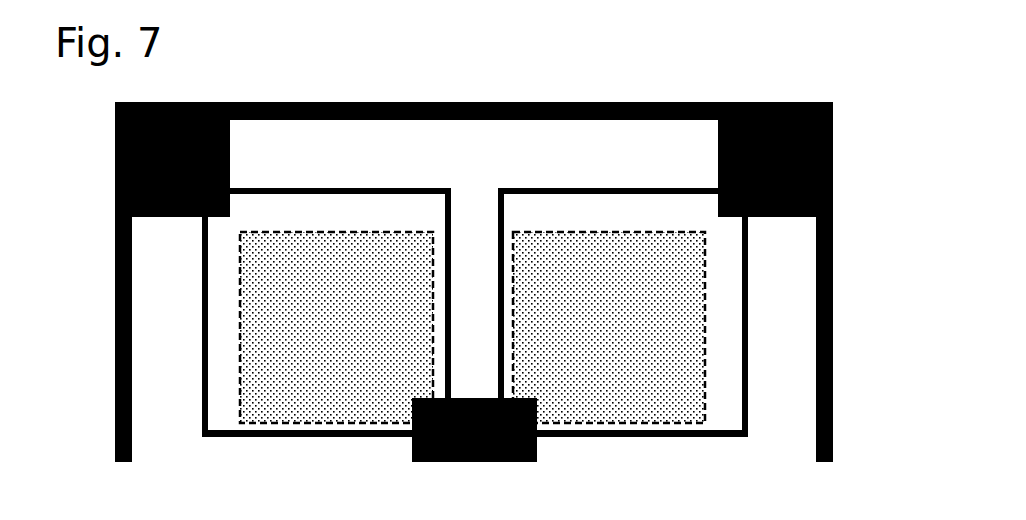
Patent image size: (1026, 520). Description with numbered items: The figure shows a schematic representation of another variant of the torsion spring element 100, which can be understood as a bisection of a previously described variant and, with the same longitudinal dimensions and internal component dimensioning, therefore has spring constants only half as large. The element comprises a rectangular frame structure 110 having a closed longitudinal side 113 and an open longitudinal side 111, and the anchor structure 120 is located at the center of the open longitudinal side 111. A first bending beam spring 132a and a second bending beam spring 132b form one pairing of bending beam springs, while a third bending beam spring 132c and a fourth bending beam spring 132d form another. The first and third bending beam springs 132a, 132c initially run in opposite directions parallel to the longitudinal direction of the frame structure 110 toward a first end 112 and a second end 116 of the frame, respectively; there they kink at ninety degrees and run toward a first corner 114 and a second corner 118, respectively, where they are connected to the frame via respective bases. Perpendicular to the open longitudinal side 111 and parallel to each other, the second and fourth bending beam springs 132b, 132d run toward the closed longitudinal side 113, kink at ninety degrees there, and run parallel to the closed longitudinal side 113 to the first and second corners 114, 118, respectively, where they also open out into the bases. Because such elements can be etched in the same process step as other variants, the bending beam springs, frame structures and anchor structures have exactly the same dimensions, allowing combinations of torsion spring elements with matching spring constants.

The torsion spring element 100 is at (752, 64).
The frame structure 110 is at (297, 102).
The closed longitudinal side 113 is at (513, 83).
The second corner 118 is at (115, 118).
The first corner 114 is at (810, 102).
The second end 116 is at (115, 450).
The first end 112 is at (833, 437).
The anchor structure 120 is at (447, 462).
The open longitudinal side 111 is at (590, 467).
The first bending beam spring 132a is at (747, 340).
The second bending beam spring 132b is at (667, 188).
The third bending beam spring 132c is at (202, 358).
The fourth bending beam spring 132d is at (425, 188).